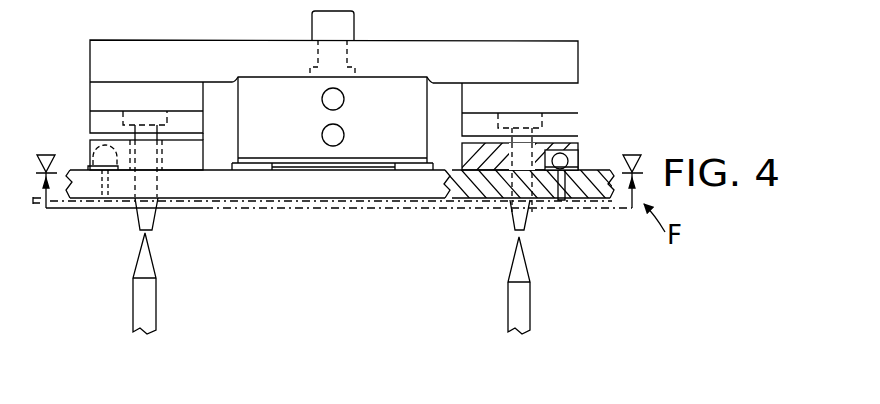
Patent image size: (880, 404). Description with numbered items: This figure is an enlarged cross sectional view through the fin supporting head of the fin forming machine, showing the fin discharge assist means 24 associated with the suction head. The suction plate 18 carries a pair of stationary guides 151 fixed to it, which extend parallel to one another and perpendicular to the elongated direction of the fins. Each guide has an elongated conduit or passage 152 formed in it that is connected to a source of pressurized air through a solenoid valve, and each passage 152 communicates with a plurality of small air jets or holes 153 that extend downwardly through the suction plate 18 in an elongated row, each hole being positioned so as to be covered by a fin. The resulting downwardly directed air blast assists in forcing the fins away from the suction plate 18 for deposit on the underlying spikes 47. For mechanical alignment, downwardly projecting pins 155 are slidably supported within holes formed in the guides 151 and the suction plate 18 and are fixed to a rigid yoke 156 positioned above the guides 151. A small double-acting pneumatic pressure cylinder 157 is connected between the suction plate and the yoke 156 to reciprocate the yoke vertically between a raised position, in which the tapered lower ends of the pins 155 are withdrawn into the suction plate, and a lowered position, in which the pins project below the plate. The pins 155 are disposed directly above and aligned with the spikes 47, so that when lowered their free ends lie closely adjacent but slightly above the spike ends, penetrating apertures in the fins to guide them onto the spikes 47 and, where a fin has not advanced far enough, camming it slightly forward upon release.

The suction plate 18 is at (288, 192).
The fin discharge assist means 24 is at (610, 91).
The spikes 47 is at (145, 308).
The stationary guides 151 is at (92, 138).
The conduit or passage 152 is at (580, 157).
The air jets or holes 153 is at (562, 197).
The pins 155 is at (142, 180).
The yoke 156 is at (143, 54).
The double-acting pneumatic pressure cylinder 157 is at (397, 108).